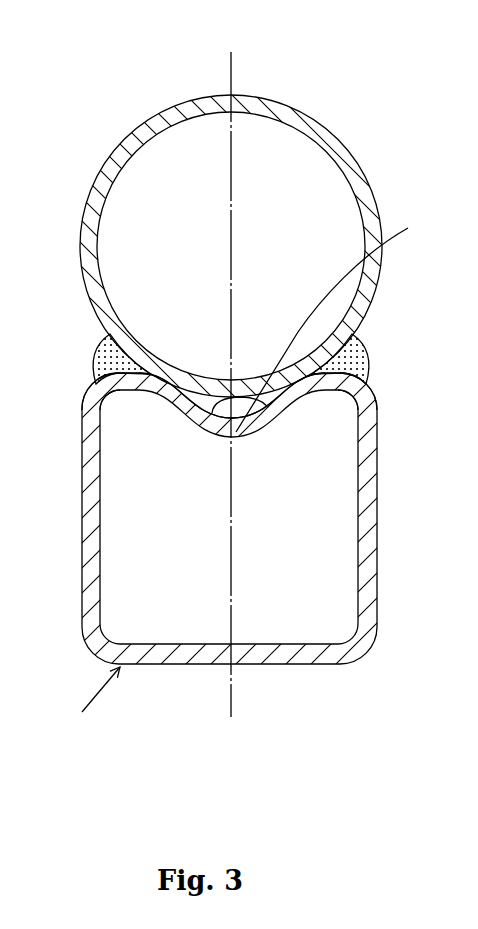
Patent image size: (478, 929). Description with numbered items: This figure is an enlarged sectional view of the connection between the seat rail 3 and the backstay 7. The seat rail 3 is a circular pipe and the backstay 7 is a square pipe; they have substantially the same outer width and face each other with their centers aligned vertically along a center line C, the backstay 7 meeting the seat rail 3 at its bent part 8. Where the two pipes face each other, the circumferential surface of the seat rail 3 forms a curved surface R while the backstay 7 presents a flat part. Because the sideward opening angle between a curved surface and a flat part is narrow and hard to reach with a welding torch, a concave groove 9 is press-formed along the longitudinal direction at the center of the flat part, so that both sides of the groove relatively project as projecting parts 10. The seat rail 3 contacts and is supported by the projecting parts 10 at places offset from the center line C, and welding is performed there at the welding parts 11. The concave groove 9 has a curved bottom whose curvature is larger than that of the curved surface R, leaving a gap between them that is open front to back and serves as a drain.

The seat rail 3 is at (322, 120).
The backstay 7 is at (94, 702).
The bent part 8 is at (372, 537).
The concave groove 9 is at (262, 398).
The projecting parts 10 is at (137, 405).
The welding parts 11 is at (99, 353).
The center line C is at (231, 372).
The curved surface R is at (333, 325).